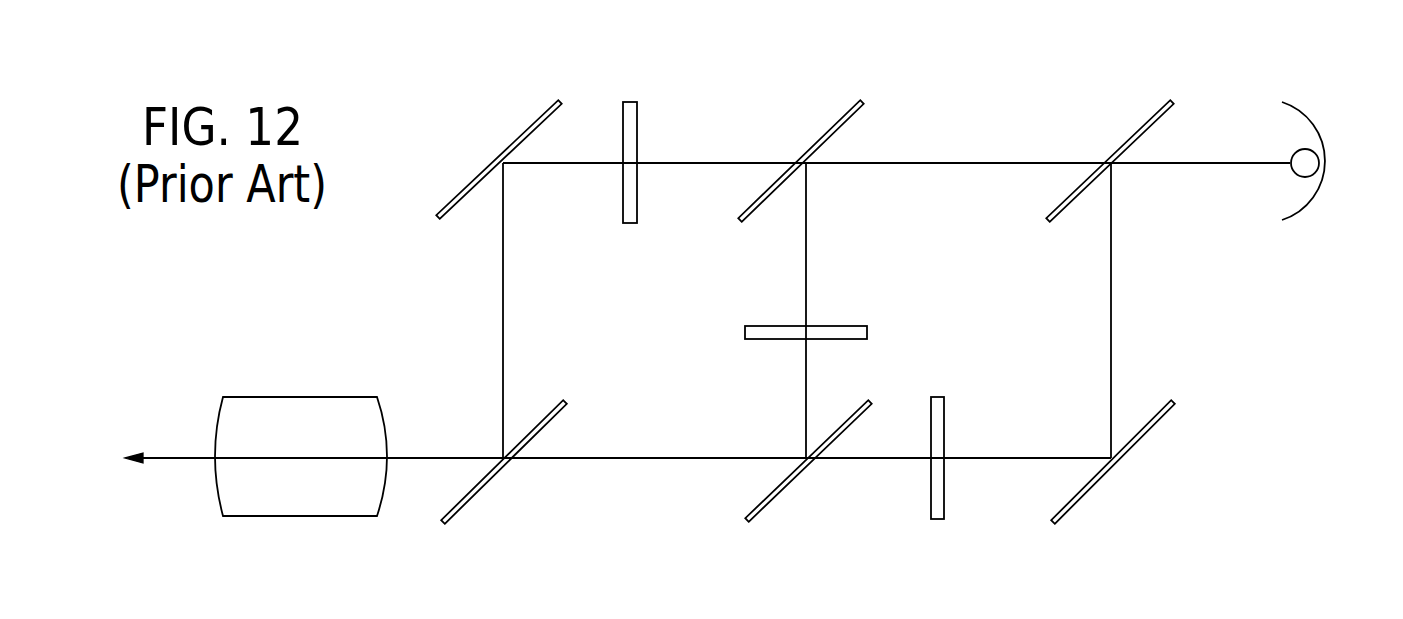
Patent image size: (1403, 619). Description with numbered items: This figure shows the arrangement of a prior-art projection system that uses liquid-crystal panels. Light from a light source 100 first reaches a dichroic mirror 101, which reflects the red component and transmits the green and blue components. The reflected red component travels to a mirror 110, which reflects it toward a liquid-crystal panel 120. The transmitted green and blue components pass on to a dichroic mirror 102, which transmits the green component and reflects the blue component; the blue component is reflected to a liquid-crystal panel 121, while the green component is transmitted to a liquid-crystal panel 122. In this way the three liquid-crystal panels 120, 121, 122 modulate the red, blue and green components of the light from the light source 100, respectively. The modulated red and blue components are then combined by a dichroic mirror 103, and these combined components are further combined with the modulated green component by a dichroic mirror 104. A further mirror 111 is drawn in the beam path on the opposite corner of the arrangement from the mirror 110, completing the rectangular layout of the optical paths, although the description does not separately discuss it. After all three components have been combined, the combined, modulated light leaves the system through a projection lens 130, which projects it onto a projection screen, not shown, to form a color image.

The light source 100 is at (1358, 183).
The dichroic mirror 101 is at (1160, 100).
The dichroic mirror 102 is at (850, 100).
The dichroic mirror 103 is at (787, 485).
The dichroic mirror 104 is at (480, 487).
The mirror 110 is at (1092, 487).
The mirror 111 is at (547, 100).
The liquid-crystal panel 120 is at (945, 490).
The liquid-crystal panel 121 is at (850, 326).
The liquid-crystal panel 122 is at (637, 108).
The projection lens 130 is at (305, 498).